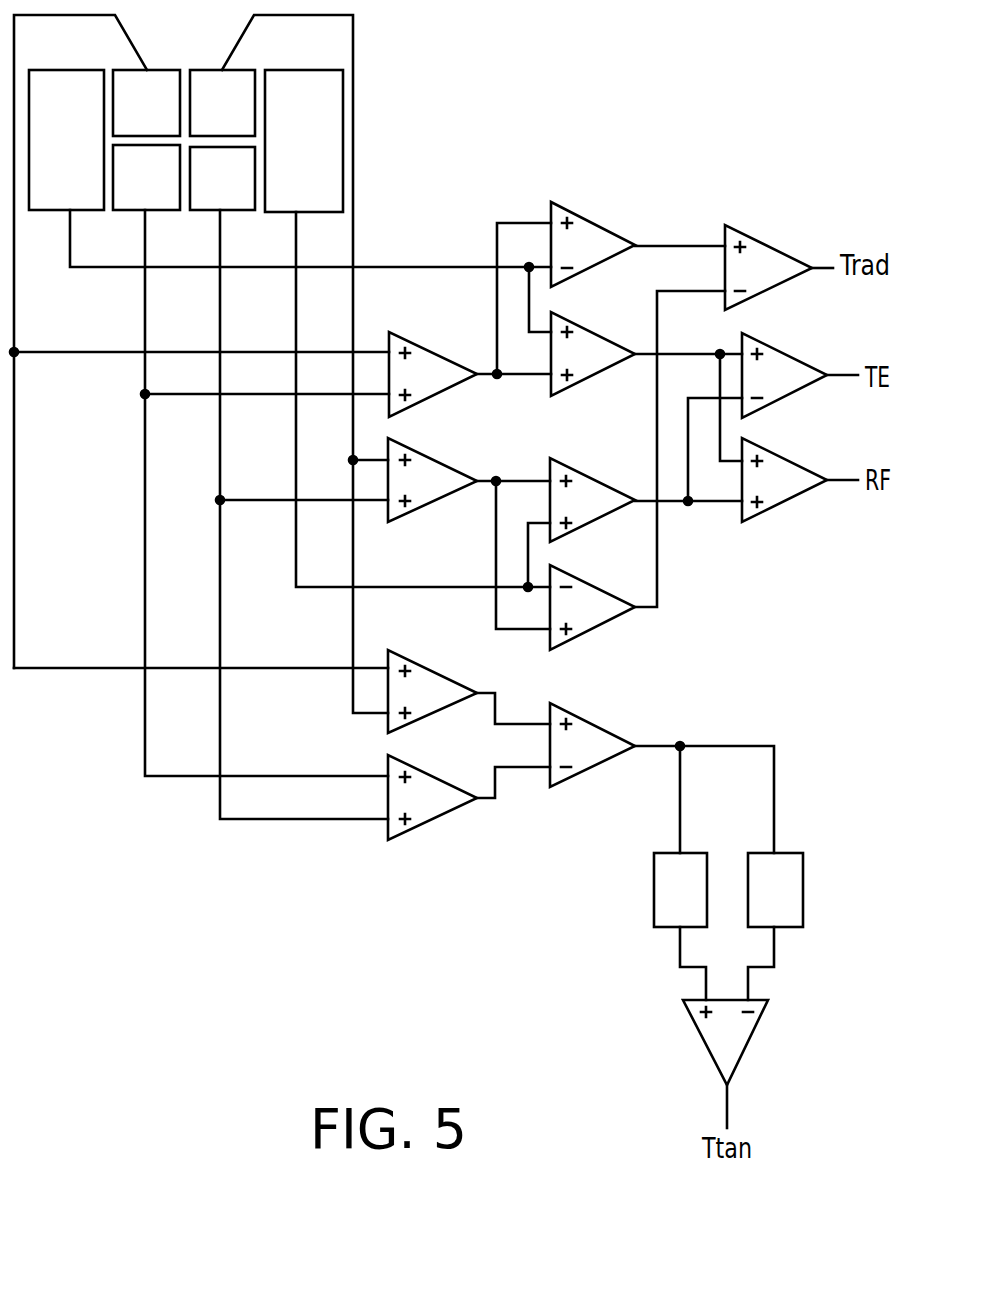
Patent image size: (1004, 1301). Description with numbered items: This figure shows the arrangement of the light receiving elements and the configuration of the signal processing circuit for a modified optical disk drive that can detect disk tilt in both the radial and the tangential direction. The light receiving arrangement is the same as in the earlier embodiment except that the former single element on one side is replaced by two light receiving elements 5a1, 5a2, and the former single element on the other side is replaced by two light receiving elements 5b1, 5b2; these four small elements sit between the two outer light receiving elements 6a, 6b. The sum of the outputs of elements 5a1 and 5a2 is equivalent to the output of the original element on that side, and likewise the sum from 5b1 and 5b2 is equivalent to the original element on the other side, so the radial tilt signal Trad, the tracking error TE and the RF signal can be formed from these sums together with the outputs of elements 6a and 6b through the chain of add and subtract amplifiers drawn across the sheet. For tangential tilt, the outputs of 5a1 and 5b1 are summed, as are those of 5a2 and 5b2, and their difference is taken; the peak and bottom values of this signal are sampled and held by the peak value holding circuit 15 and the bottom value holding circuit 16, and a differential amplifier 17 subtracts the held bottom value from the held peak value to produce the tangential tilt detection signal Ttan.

The light receiving element 6a is at (66, 140).
The light receiving element 6b is at (304, 141).
The light receiving element 5a1 is at (146, 103).
The light receiving element 5a2 is at (146, 177).
The light receiving element 5b1 is at (222, 103).
The light receiving element 5b2 is at (222, 178).
The peak value holding circuit 15 is at (660, 907).
The bottom value holding circuit 16 is at (790, 910).
The differential amplifier 17 is at (705, 1040).